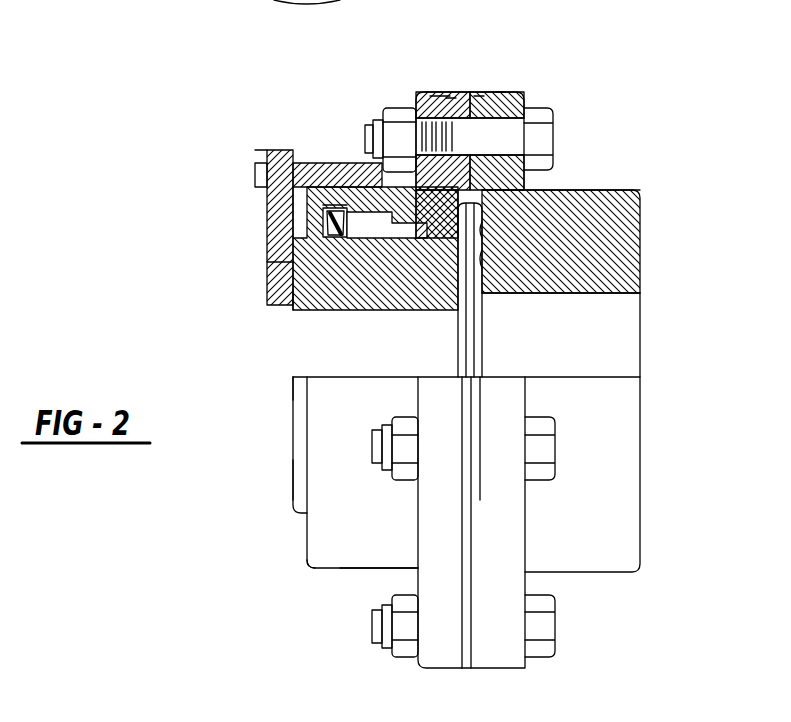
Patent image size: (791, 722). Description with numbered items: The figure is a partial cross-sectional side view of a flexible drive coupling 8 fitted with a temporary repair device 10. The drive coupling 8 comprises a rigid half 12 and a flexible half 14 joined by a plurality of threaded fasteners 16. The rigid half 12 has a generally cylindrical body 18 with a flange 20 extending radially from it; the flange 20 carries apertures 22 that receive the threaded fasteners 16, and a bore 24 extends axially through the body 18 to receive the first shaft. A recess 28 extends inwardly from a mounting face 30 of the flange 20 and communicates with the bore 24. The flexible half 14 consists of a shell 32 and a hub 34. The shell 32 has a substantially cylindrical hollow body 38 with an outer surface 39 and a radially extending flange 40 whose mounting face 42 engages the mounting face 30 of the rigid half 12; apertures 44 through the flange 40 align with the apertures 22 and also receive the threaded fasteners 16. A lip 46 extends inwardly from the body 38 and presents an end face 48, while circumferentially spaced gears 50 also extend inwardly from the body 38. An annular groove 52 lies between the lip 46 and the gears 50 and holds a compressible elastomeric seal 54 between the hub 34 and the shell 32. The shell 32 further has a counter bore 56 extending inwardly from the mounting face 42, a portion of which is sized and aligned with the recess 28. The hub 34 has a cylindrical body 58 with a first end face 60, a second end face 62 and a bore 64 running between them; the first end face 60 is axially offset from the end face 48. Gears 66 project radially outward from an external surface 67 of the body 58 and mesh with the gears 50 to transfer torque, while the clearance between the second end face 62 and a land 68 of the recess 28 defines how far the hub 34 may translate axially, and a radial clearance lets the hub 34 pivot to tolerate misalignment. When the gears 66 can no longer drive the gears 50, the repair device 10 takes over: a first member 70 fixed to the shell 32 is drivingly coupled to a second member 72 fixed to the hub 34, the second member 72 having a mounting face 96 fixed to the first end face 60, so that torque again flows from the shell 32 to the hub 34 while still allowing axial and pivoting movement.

The flexible drive coupling 8 is at (234, 263).
The temporary repair device 10 is at (248, 150).
The rigid half 12 is at (645, 508).
The flexible half 14 is at (290, 555).
The threaded fasteners 16 is at (553, 142).
The body 18 is at (580, 205).
The flange 20 is at (522, 97).
The apertures 22 is at (520, 91).
The bore 24 is at (603, 296).
The recess 28 is at (483, 223).
The mounting face 30 is at (478, 97).
The shell 32 is at (317, 572).
The hub 34 is at (159, 0).
The hollow body 38 is at (324, 153).
The outer surface 39 is at (362, 572).
The flange 40 is at (444, 98).
The mounting face 42 is at (500, 93).
The apertures 44 is at (451, 100).
The lip 46 is at (308, 217).
The end face 48 is at (292, 222).
The gears 50 is at (432, 98).
The annular groove 52 is at (387, 277).
The seal 54 is at (337, 245).
The counter bore 56 is at (483, 292).
The body 58 is at (293, 388).
The first end face 60 is at (290, 478).
The second end face 62 is at (483, 268).
The bore 64 is at (357, 300).
The gears 66 is at (440, 320).
The external surface 67 is at (483, 190).
The land 68 is at (567, 293).
The first member 70 is at (337, 163).
The second member 72 is at (262, 232).
The mounting face 96 is at (300, 305).